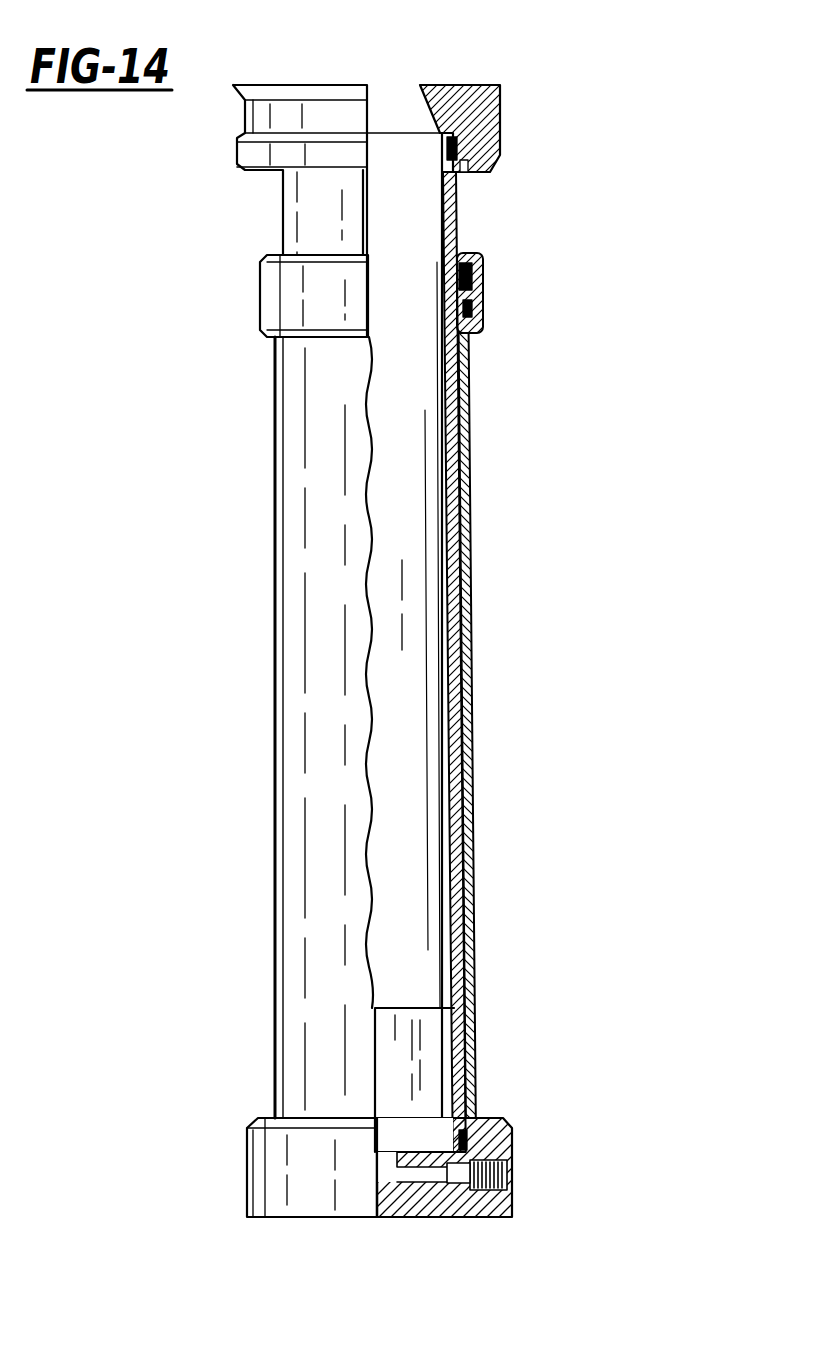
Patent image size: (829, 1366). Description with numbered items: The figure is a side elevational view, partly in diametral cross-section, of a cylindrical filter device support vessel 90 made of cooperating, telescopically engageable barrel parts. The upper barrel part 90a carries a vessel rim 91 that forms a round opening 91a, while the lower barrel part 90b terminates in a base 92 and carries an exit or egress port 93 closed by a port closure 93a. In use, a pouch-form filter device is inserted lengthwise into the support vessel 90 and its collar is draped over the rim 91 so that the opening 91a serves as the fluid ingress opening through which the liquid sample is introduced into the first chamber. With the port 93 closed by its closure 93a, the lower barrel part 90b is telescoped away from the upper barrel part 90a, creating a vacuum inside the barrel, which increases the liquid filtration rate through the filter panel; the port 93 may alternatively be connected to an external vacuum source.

The support vessel 90 is at (297, 492).
The upper barrel part 90a is at (450, 576).
The lower barrel part 90b is at (467, 734).
The vessel rim 91 is at (489, 120).
The round opening 91a is at (414, 156).
The base 92 is at (265, 1170).
The exit port 93 is at (430, 1173).
The port closure 93a is at (508, 1165).